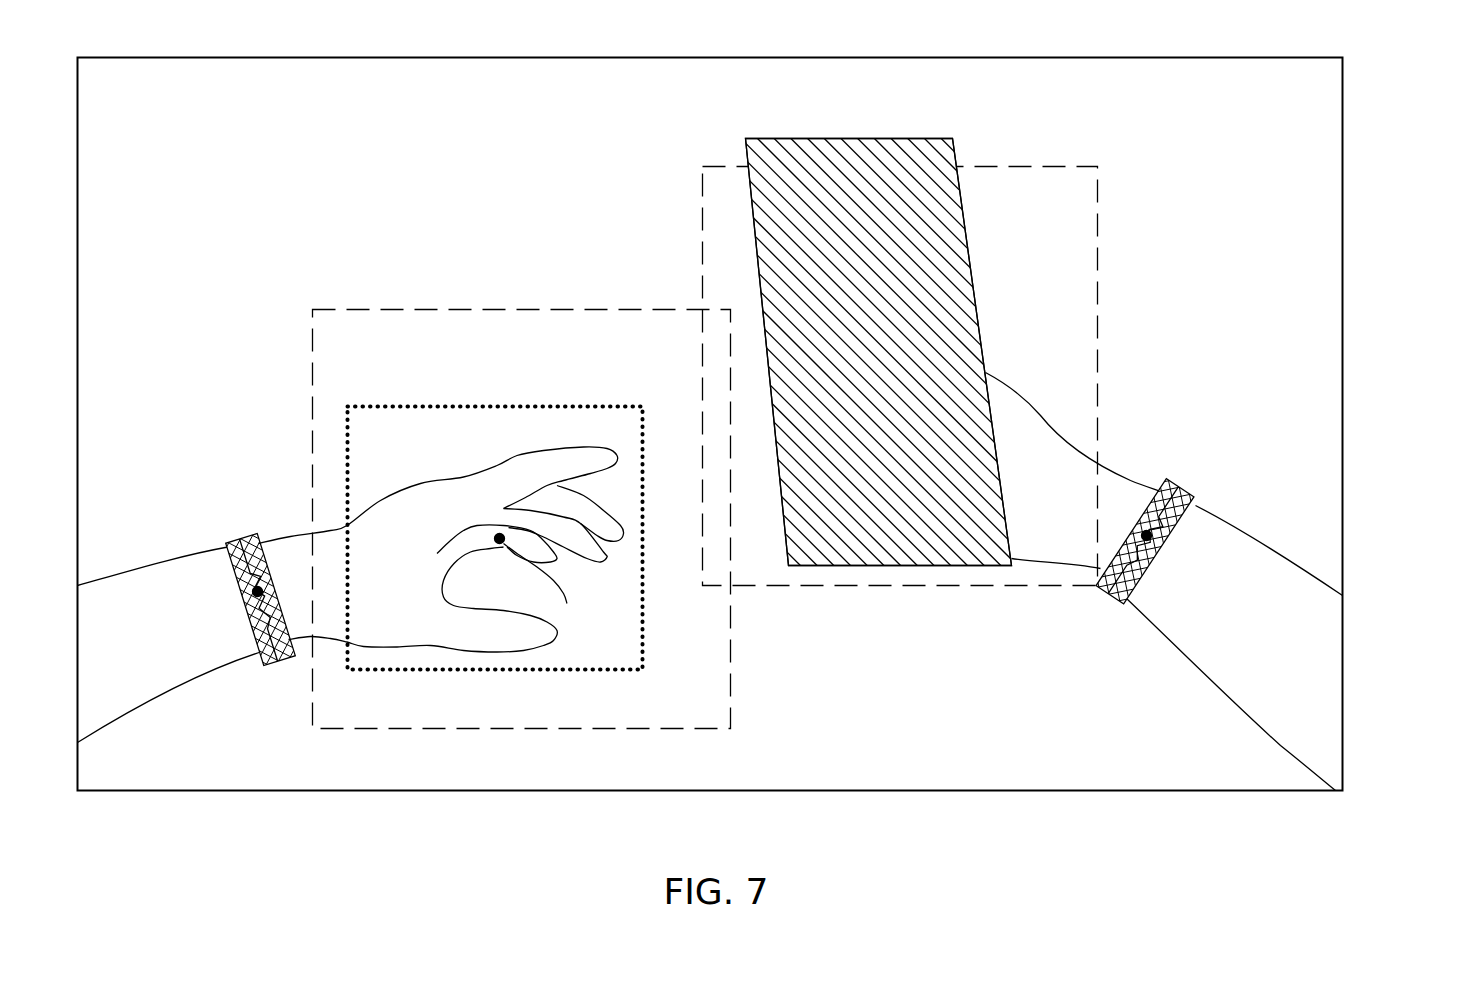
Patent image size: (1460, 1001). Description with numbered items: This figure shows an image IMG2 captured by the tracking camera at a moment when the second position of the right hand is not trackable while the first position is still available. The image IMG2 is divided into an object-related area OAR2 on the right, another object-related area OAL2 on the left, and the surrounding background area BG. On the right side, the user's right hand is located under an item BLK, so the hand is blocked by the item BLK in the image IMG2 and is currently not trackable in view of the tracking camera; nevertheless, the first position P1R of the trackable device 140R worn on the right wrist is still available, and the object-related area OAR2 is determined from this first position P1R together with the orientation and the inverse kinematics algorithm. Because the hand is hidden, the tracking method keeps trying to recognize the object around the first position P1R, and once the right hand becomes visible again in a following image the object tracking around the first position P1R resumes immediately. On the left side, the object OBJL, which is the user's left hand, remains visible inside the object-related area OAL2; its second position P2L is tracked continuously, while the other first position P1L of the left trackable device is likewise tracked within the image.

The image IMG2 is at (1342, 128).
The background area BG is at (290, 166).
The object-related area OAL2 is at (435, 309).
The object OBJL is at (530, 405).
The object-related area OAR2 is at (995, 166).
The item BLK is at (870, 138).
The trackable device 140R is at (1186, 488).
The first position P1R is at (1150, 532).
The first position P1L is at (250, 590).
The second position P2L is at (544, 578).